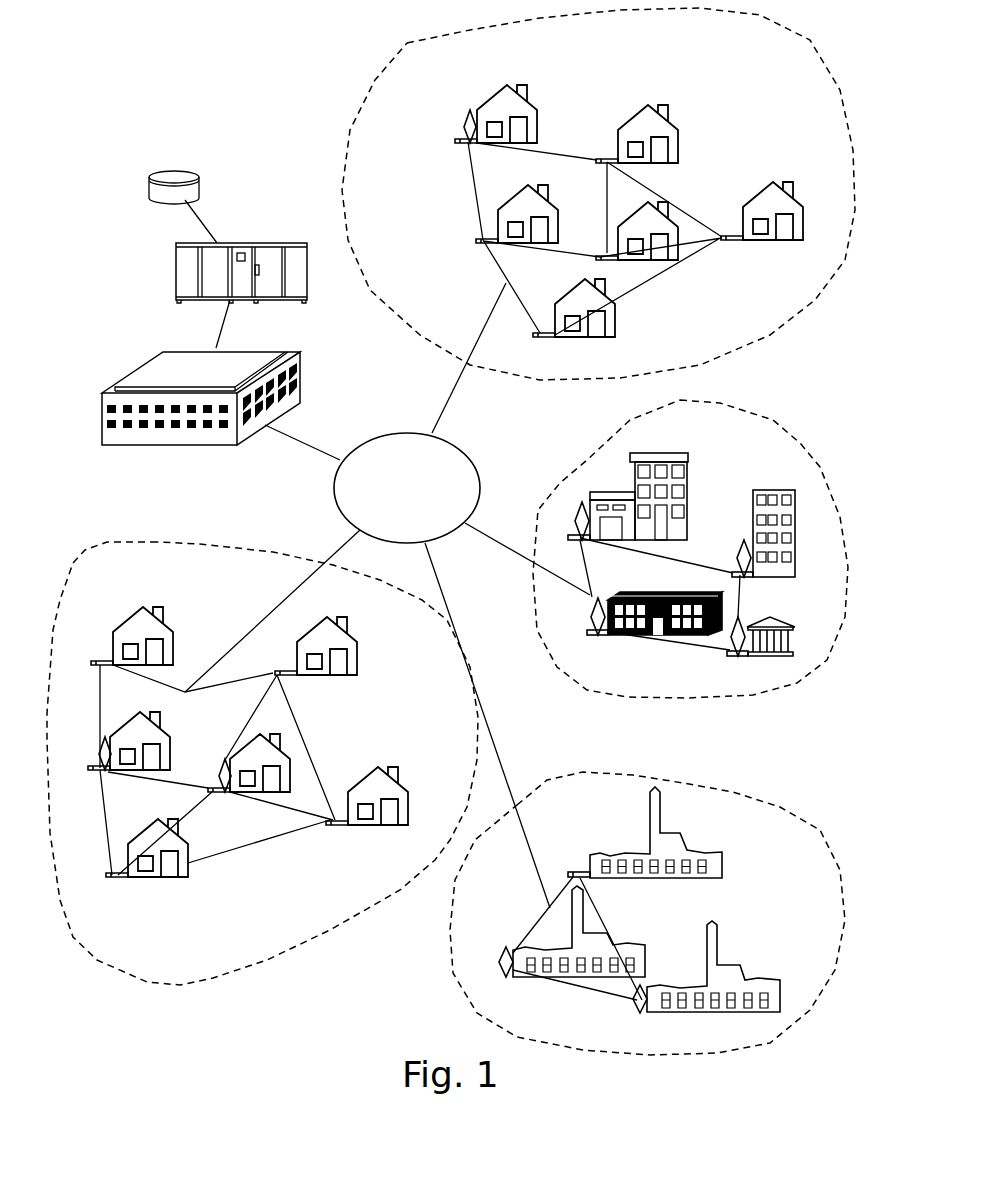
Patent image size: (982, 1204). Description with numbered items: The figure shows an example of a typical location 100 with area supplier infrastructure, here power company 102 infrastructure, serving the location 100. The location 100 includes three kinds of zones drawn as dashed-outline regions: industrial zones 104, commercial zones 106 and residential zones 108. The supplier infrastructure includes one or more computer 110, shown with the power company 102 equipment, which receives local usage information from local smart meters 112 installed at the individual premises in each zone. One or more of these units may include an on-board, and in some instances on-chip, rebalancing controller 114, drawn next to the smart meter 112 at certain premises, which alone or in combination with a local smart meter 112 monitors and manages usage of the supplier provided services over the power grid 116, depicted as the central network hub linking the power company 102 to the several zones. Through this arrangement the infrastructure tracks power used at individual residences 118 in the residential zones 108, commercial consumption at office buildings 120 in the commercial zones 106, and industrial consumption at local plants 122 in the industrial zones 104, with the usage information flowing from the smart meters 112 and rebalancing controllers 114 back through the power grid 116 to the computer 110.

The location 100 is at (156, 1010).
The power company 102 is at (130, 371).
The industrial zones 104 is at (690, 787).
The commercial zones 106 is at (539, 507).
The residential zones 108 is at (407, 43).
The computer 110 is at (273, 243).
The local smart meter 112 is at (480, 239).
The rebalancing controller 114 is at (465, 127).
The power grid 116 is at (395, 435).
The residences 118 is at (527, 102).
The office buildings 120 is at (687, 485).
The local plants 122 is at (720, 963).